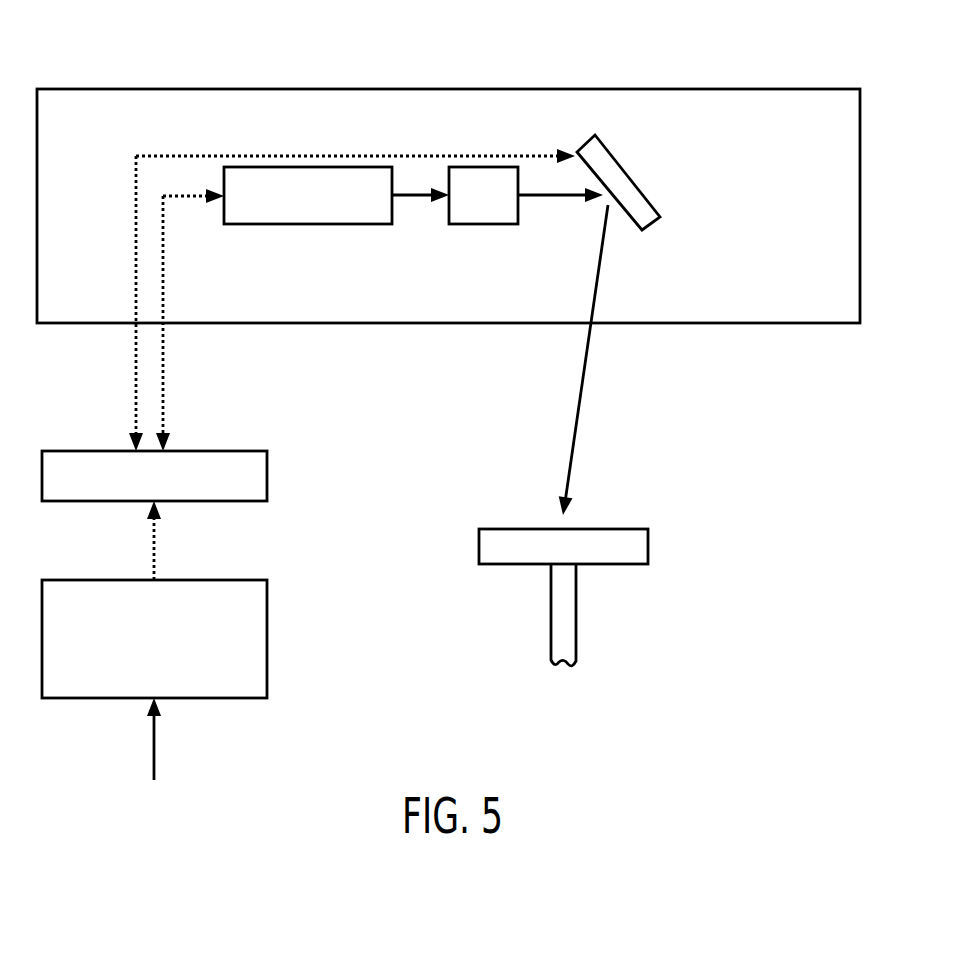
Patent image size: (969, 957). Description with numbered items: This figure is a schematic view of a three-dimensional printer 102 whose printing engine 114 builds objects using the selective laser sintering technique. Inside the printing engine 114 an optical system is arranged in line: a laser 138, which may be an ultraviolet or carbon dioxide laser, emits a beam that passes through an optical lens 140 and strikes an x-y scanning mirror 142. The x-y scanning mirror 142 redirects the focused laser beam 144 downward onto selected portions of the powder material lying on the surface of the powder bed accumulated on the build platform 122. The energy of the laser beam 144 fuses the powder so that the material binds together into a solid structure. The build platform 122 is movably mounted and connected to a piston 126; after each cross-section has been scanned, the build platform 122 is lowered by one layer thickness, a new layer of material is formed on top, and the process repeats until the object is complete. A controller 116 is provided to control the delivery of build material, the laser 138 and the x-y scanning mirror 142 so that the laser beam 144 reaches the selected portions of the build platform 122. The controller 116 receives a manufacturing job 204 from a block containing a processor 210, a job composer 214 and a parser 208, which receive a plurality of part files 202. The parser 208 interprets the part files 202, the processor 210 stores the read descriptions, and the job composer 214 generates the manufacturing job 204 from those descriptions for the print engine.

The 3D printing engine 114 is at (447, 89).
The laser 138 is at (331, 211).
The optical lens 140 is at (506, 211).
The x-y scanning mirror 142 is at (628, 172).
The laser beam 144 is at (583, 392).
The build platform 122 is at (648, 541).
The piston 126 is at (576, 610).
The 3D printer 102 is at (667, 705).
The controller 116 is at (308, 325).
The manufacturing job 204 is at (156, 548).
The processor 210 is at (154, 639).
The job composer 214 is at (154, 635).
The parser 208 is at (154, 673).
The part files 202 is at (156, 746).